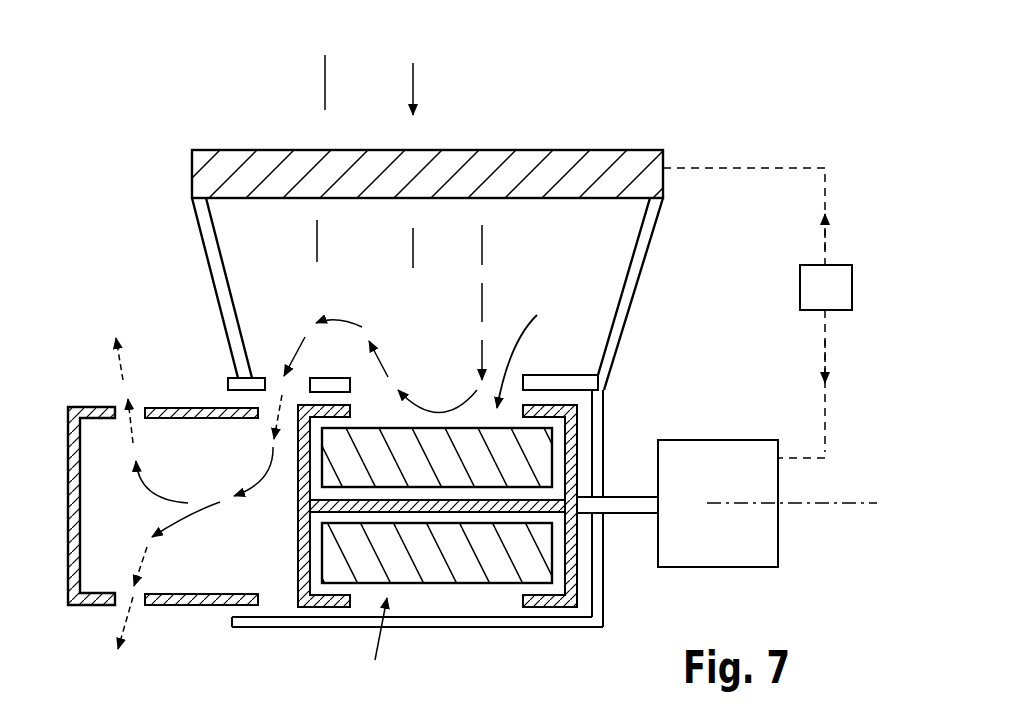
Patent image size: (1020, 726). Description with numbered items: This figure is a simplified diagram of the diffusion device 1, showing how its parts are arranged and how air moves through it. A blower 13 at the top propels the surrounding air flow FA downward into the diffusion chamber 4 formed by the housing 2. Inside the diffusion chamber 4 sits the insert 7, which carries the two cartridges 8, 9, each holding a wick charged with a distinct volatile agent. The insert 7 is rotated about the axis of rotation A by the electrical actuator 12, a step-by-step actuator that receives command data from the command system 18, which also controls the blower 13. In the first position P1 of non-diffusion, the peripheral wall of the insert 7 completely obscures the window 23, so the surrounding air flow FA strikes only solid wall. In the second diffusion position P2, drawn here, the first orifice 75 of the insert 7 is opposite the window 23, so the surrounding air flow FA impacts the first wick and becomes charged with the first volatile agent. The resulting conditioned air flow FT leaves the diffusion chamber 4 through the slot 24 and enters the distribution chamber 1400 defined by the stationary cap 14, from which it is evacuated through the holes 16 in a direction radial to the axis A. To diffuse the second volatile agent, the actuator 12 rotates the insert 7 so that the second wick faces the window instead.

The diffusion device 1 is at (722, 252).
The housing 2 is at (650, 243).
The diffusion chamber 4 is at (583, 252).
The insert 7 is at (330, 600).
The cartridge 8 is at (423, 490).
The cartridge 9 is at (483, 585).
The electrical actuator 12 is at (732, 548).
The blower 13 is at (657, 150).
The cap 14 is at (68, 561).
The holes 16 is at (146, 406).
The command system 18 is at (853, 287).
The window 23 is at (527, 357).
The slot 24 is at (262, 378).
The first orifice 75 is at (527, 402).
The conditioned air distribution chamber 1400 is at (268, 573).
The surrounding air flow FA is at (425, 152).
The conditioned air flow FT is at (296, 491).
The first position P1 is at (375, 645).
The second diffusion position P2 is at (528, 350).
The axis of rotation A is at (792, 487).